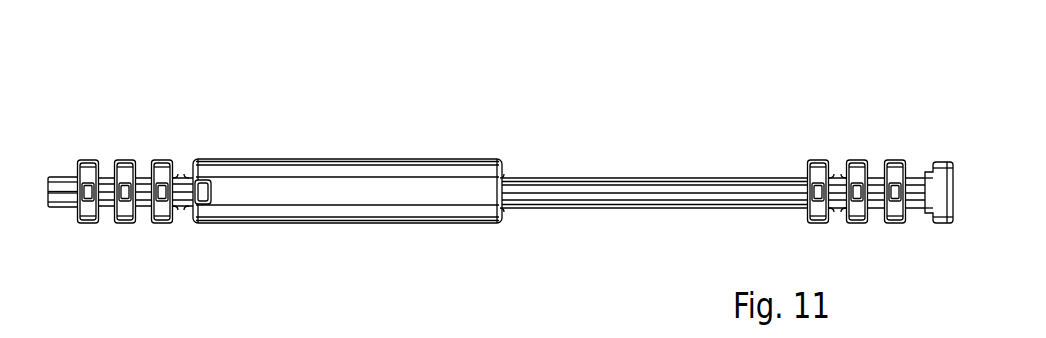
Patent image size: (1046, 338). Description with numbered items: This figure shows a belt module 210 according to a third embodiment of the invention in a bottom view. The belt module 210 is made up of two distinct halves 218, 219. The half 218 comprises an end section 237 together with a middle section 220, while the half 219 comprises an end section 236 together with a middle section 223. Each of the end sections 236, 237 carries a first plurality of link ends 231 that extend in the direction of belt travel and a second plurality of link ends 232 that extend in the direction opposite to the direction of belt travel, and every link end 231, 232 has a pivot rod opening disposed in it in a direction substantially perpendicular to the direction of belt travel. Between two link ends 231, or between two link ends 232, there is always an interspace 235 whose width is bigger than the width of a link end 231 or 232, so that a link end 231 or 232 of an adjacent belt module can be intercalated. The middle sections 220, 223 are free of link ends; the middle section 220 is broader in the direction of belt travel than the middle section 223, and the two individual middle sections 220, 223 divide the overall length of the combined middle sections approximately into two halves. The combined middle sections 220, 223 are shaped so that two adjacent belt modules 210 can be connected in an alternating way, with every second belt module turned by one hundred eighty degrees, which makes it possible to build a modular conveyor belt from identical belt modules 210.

The belt module 210 is at (503, 166).
The half 218 is at (340, 235).
The half 219 is at (605, 233).
The middle section 220 is at (351, 140).
The middle section 223 is at (663, 143).
The first plurality of link ends 231 is at (855, 212).
The second plurality of link ends 232 is at (815, 162).
The interspace 235 is at (185, 215).
The end section 236 is at (878, 137).
The end section 237 is at (152, 110).